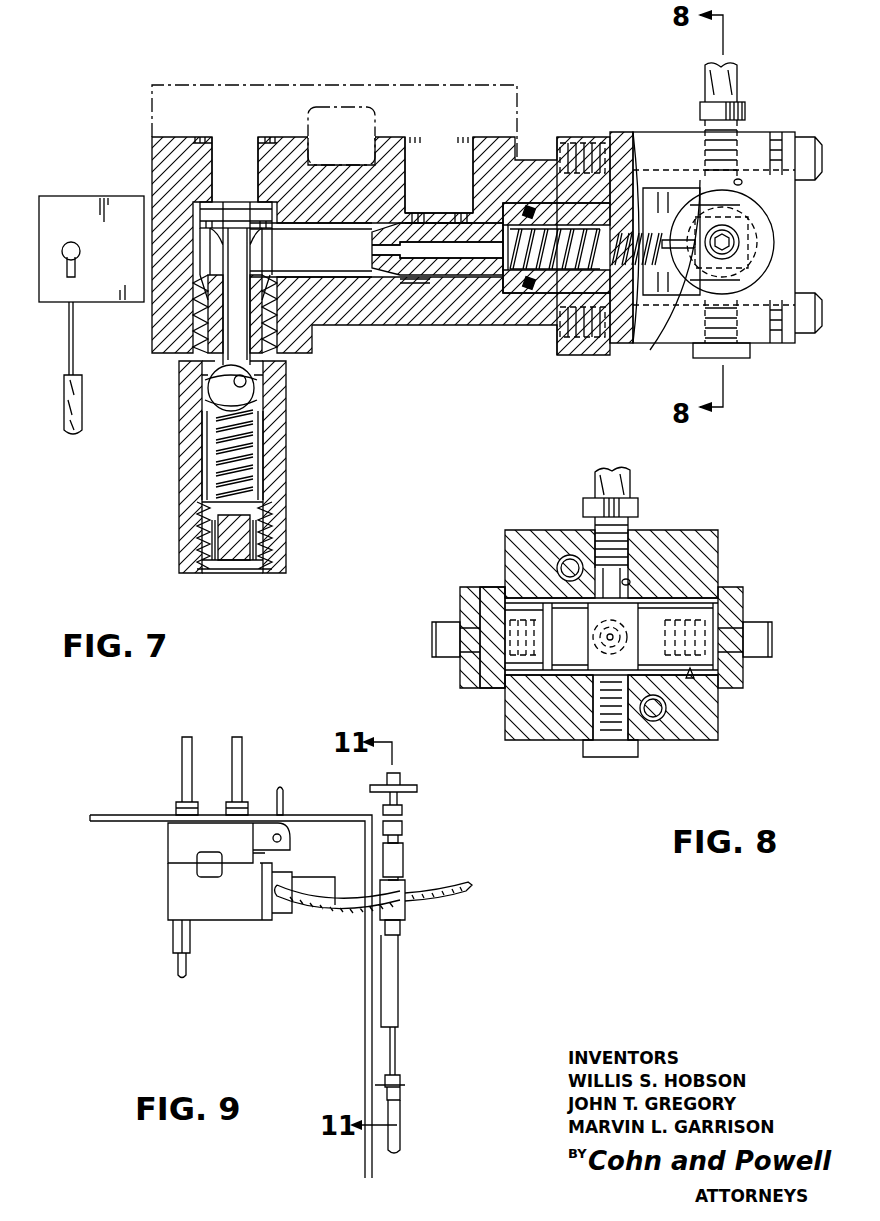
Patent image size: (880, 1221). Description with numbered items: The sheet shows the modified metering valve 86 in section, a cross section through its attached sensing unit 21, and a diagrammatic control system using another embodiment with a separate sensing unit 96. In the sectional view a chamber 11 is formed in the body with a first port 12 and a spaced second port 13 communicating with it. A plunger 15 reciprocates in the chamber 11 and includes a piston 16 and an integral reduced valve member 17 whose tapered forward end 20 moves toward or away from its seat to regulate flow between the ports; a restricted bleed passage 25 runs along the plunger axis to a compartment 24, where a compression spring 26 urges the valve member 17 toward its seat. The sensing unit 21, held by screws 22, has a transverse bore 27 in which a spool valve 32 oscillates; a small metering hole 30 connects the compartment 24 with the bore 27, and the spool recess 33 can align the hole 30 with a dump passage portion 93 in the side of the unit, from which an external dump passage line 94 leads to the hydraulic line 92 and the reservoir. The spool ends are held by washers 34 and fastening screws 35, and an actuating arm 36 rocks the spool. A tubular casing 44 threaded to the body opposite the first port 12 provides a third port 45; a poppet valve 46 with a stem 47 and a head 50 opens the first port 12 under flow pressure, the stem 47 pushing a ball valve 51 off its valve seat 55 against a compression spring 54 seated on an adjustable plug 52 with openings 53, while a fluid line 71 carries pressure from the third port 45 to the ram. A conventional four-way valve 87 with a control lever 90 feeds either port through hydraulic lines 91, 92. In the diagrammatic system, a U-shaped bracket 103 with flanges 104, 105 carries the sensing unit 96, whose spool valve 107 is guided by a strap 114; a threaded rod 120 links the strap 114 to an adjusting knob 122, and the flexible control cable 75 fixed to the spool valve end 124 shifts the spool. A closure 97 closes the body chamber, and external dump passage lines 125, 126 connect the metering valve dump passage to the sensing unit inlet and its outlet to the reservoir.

In FIG. 7, the chamber 11 is at (301, 266).
In FIG. 7, the first port 12 is at (252, 140).
In FIG. 7, the second port 13 is at (466, 140).
In FIG. 7, the plunger 15 is at (440, 286).
In FIG. 7, the piston 16 is at (516, 295).
In FIG. 7, the valve member 17 is at (457, 212).
In FIG. 7, the tapered forward end 20 is at (375, 226).
In FIG. 7, the sensing unit 21 is at (621, 128).
In FIG. 8, the sensing unit 21 is at (523, 526).
In FIG. 7, the screws 22 is at (806, 137).
In FIG. 8, the screws 22 is at (660, 722).
In FIG. 7, the compartment 24 is at (584, 200).
In FIG. 7, the bleed passage 25 is at (372, 252).
In FIG. 7, the compression spring 26 is at (521, 212).
In FIG. 8, the bore 27 is at (690, 680).
In FIG. 7, the metering hole 30 is at (688, 272).
In FIG. 8, the metering hole 30 is at (607, 640).
In FIG. 7, the spool valve 32 is at (775, 242).
In FIG. 8, the spool valve 32 is at (520, 670).
In FIG. 7, the recess 33 is at (707, 215).
In FIG. 8, the recess 33 is at (588, 594).
In FIG. 7, the washers 34 is at (688, 285).
In FIG. 8, the washers 34 is at (458, 600).
In FIG. 7, the fastening screws 35 is at (748, 262).
In FIG. 8, the fastening screws 35 is at (432, 641).
In FIG. 7, the actuating arm 36 is at (70, 200).
In FIG. 8, the actuating arm 36 is at (492, 587).
In FIG. 7, the tubular casing 44 is at (178, 449).
In FIG. 9, the tubular casing 44 is at (173, 938).
In FIG. 7, the third port 45 is at (258, 442).
In FIG. 7, the poppet valve 46 is at (218, 252).
In FIG. 7, the stem 47 is at (200, 320).
In FIG. 7, the head 50 is at (246, 206).
In FIG. 7, the ball valve 51 is at (208, 390).
In FIG. 7, the adjustable plug 52 is at (232, 565).
In FIG. 7, the openings 53 is at (210, 549).
In FIG. 7, the compression spring 54 is at (255, 487).
In FIG. 7, the valve seat 55 is at (254, 390).
In FIG. 9, the fluid line 71 is at (178, 969).
In FIG. 7, the flexible control cable 75 is at (64, 409).
In FIG. 9, the flexible control cable 75 is at (400, 1140).
In FIG. 7, the metering valve 86 is at (148, 155).
In FIG. 9, the metering valve 86 is at (164, 890).
In FIG. 7, the four-way valve 87 is at (148, 104).
In FIG. 9, the four-way valve 87 is at (164, 845).
In FIG. 9, the control lever 90 is at (285, 790).
In FIG. 9, the hydraulic line 91 is at (182, 758).
In FIG. 9, the hydraulic line 92 is at (245, 752).
In FIG. 7, the dump passage portion 93 is at (741, 185).
In FIG. 8, the dump passage portion 93 is at (632, 582).
In FIG. 7, the external dump passage line 94 is at (740, 84).
In FIG. 8, the external dump passage line 94 is at (632, 474).
In FIG. 9, the sensing unit 96 is at (410, 914).
In FIG. 9, the closure 97 is at (318, 880).
In FIG. 9, the U-shaped bracket 103 is at (383, 1058).
In FIG. 9, the bracket flange 104 is at (403, 819).
In FIG. 9, the bracket flange 105 is at (402, 1085).
In FIG. 9, the spool valve 107 is at (400, 928).
In FIG. 9, the strap 114 is at (403, 853).
In FIG. 9, the threaded rod 120 is at (381, 809).
In FIG. 9, the adjusting knob 122 is at (405, 785).
In FIG. 9, the spool valve end 124 is at (398, 1010).
In FIG. 9, the external dump passage line 125 is at (350, 905).
In FIG. 9, the external dump passage line 126 is at (418, 891).